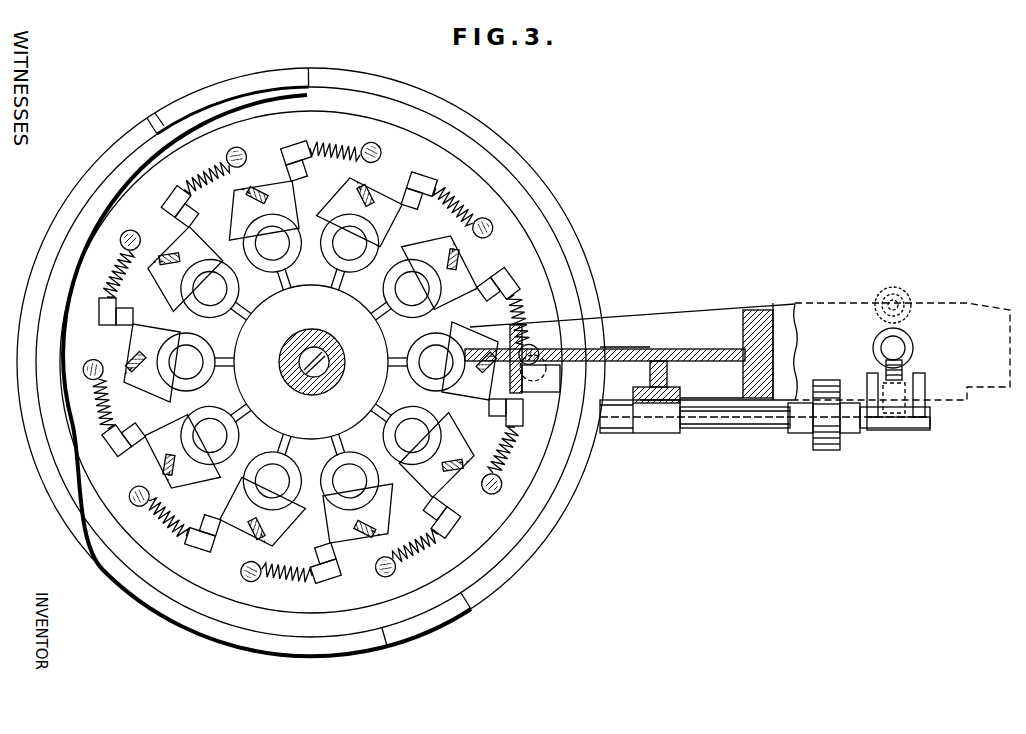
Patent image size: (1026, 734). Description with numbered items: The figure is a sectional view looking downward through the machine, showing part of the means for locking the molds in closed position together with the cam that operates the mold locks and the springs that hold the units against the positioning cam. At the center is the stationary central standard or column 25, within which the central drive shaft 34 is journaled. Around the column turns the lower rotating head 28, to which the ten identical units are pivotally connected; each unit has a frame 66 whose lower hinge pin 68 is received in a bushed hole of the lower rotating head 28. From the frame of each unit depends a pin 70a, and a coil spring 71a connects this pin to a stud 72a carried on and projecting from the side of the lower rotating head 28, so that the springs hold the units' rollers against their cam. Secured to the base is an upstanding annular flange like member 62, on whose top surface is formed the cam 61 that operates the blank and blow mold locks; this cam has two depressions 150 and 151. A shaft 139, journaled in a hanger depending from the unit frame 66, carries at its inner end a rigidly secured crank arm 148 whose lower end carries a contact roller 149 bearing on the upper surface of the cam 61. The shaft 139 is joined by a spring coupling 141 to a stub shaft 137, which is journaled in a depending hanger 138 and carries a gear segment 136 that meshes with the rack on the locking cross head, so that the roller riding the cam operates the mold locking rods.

The depression 151 is at (213, 84).
The depression 150 is at (470, 608).
The stud 72a is at (290, 146).
The coil spring 71a is at (455, 192).
The pin 70a is at (494, 226).
The frame 66 is at (143, 233).
The lower hinge pin 68 is at (212, 304).
The central drive shaft 34 is at (313, 358).
The central standard or column 25 is at (340, 376).
The contact roller 149 is at (615, 324).
The gear segment 136 is at (905, 370).
The depending hanger 138 is at (925, 382).
The shaft 137 is at (933, 420).
The shaft 139 is at (733, 424).
The crank arm 148 is at (617, 433).
The spring coupling 141 is at (824, 452).
The lower rotating head 28 is at (134, 437).
The cam 61 is at (292, 650).
The annular flange like member 62 is at (343, 622).